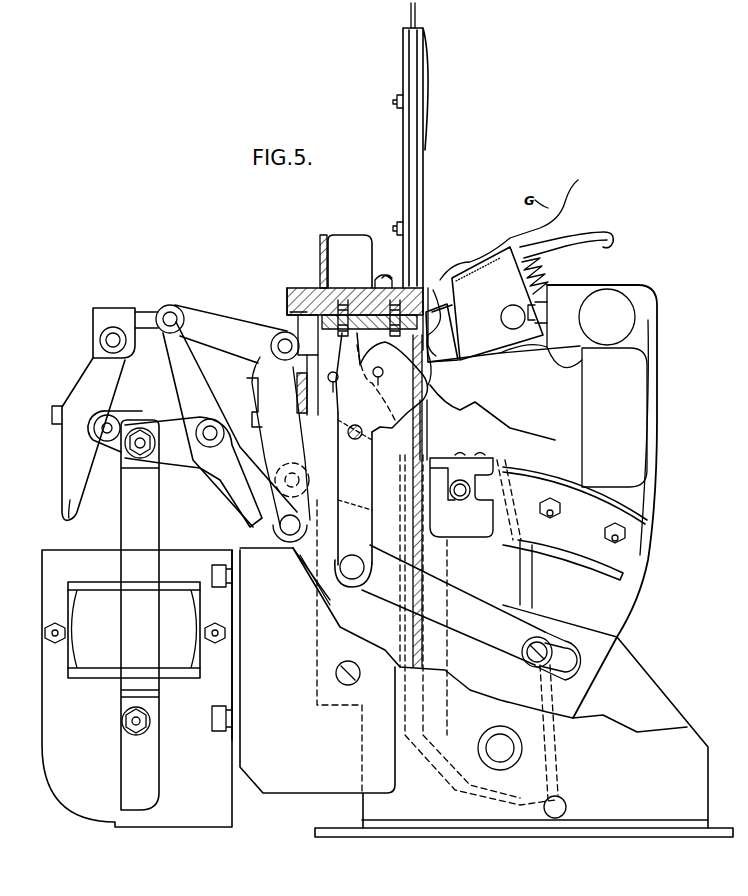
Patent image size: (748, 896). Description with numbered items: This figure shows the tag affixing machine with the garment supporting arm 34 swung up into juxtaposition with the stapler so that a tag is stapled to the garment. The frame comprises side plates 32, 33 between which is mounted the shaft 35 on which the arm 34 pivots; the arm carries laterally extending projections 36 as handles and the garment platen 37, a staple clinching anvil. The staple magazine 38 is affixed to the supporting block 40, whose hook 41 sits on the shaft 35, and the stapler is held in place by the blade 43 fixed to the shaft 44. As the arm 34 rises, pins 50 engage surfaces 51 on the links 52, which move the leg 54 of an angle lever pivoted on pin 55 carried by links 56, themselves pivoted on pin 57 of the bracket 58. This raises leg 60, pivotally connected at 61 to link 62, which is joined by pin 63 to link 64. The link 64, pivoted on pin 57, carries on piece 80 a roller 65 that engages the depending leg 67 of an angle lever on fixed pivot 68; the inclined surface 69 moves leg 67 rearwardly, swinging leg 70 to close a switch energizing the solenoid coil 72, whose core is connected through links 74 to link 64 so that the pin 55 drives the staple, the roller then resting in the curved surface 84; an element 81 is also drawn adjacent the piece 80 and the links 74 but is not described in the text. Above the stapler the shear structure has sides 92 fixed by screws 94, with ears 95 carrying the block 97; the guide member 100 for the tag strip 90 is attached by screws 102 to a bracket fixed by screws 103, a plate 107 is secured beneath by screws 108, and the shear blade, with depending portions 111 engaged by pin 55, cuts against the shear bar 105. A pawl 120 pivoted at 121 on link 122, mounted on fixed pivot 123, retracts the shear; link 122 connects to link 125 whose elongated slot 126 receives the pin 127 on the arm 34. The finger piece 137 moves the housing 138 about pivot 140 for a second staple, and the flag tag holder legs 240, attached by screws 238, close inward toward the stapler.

The tag strip 90 is at (418, 12).
The guide member 100 is at (424, 118).
The screws 102 is at (397, 100).
The sides of channel shaped piece 92 is at (340, 235).
The rearwardly extending portions 95 is at (320, 246).
The block 97 is at (300, 289).
The screws 103 is at (389, 275).
The shear bar 105 is at (432, 288).
The plate 107 is at (438, 356).
The depending portions of shear 111 is at (287, 313).
The garment platen 37 is at (438, 340).
The housing 138 is at (487, 258).
The pivot 140 is at (504, 310).
The finger piece 137 is at (592, 230).
The garment supporting arm 34 is at (640, 417).
The laterally extending projections 36 is at (607, 317).
The blade 43 is at (533, 587).
The supporting block 40 is at (463, 533).
The staple magazine 38 is at (422, 563).
The side plate 33 is at (648, 685).
The side plate 32 is at (695, 782).
The shaft 35 is at (492, 738).
The shaft 44 is at (566, 803).
The hook 41 is at (500, 776).
The pins 50 is at (462, 500).
The surfaces 51 is at (463, 478).
The screws 238 is at (487, 447).
The links 52 is at (425, 465).
The upwardly extending leg portions 240 is at (450, 410).
The screws 108 is at (377, 360).
The pawl 120 is at (356, 358).
The pivot 121 is at (383, 384).
The fixed pivot 123 is at (354, 426).
The screws 94 is at (315, 385).
The link 122 is at (340, 480).
The link 125 is at (380, 585).
The pin 127 is at (522, 657).
The elongated slot 126 is at (566, 655).
The bracket 58 is at (304, 560).
The leg of angle lever 70 is at (146, 320).
The fixed pivot 68 is at (100, 338).
The pivotal connection 61 is at (174, 306).
The leg of angle lever 60 is at (212, 320).
The pin 55 is at (272, 343).
The link 62 is at (208, 392).
The pin 63 is at (220, 440).
The link 64 is at (218, 480).
The roller 65 is at (112, 416).
The piece 80 is at (118, 447).
The armature 81 is at (152, 455).
The depending leg of angle lever 67 is at (60, 455).
The rearwardly curved surface 84 is at (84, 432).
The inclined surface 69 is at (84, 480).
The links 56 is at (255, 408).
The leg of angle lever 54 is at (290, 438).
The pin 57 is at (280, 515).
The links 74 is at (120, 567).
The solenoid coil 72 is at (175, 595).